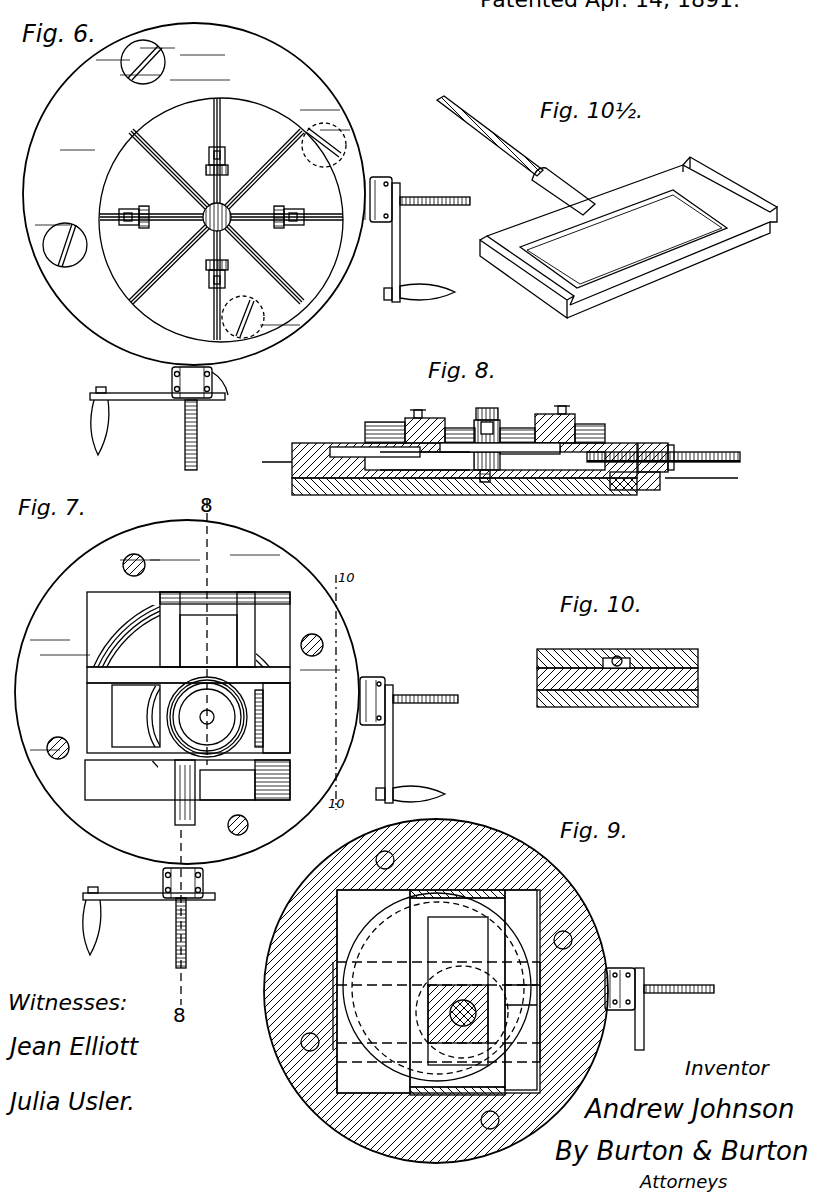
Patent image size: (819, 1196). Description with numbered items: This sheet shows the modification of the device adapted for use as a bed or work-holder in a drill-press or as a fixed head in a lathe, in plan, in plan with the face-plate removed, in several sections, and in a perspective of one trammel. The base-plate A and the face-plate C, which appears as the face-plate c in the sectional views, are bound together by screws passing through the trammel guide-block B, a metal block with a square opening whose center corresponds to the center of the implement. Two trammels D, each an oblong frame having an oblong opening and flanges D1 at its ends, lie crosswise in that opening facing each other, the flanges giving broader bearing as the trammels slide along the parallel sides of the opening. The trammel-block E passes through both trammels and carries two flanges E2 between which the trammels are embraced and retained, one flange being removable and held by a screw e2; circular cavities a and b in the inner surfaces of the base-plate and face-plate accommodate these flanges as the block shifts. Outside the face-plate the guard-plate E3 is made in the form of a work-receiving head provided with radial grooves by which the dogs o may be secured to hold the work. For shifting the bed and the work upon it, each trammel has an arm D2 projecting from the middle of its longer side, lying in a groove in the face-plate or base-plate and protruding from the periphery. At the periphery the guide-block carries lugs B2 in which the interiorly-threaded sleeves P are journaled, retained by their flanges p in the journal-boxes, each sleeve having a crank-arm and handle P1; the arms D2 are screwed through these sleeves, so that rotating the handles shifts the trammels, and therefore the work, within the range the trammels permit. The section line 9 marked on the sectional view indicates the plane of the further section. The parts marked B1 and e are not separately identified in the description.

In FIG. 6, the face-plate C is at (194, 194).
In FIG. 6, the flange or guard-plate E3 is at (221, 219).
In FIG. 8, the flange or guard-plate E3 is at (590, 427).
In FIG. 6, the dogs o is at (209, 152).
In FIG. 8, the dogs o is at (535, 414).
In FIG. 6, the lugs B2 is at (378, 180).
In FIG. 8, the lugs B2 is at (655, 488).
In FIG. 7, the lugs B2 is at (372, 680).
In FIG. 9, the lugs B2 is at (625, 972).
In FIG. 6, the flanges of the threaded sleeves p is at (398, 190).
In FIG. 8, the flanges of the threaded sleeves p is at (674, 452).
In FIG. 7, the flanges of the threaded sleeves p is at (392, 690).
In FIG. 9, the flanges of the threaded sleeves p is at (644, 984).
In FIG. 6, the crank-arm and handle P1 is at (398, 255).
In FIG. 7, the crank-arm and handle P1 is at (390, 755).
In FIG. 9, the crank-arm and handle P1 is at (644, 1020).
In FIG. 6, the trammel arm D2 is at (445, 200).
The trammel arm D2 is at (516, 155).
In FIG. 8, the trammel arm D2 is at (702, 453).
In FIG. 7, the trammel arm D2 is at (432, 697).
In FIG. 10, the trammel arm D2 is at (620, 658).
In FIG. 9, the trammel arm D2 is at (680, 988).
The trammel flanges D1 is at (728, 178).
In FIG. 8, the trammel flanges D1 is at (345, 495).
In FIG. 7, the trammel flanges D1 is at (240, 600).
In FIG. 9, the trammel flanges D1 is at (485, 890).
The trammels D is at (665, 255).
In FIG. 8, the trammels D is at (395, 478).
In FIG. 7, the trammels D is at (260, 752).
In FIG. 9, the trammels D is at (457, 992).
The circular cavity in base-plate a is at (623, 239).
In FIG. 8, the circular cavity in base-plate a is at (540, 490).
In FIG. 7, the circular cavity in base-plate a is at (207, 717).
In FIG. 9, the circular cavity in base-plate a is at (431, 991).
In FIG. 8, the circular cavity in face-plate b is at (395, 440).
In FIG. 8, the face-plate c is at (345, 443).
In FIG. 10, the face-plate c is at (680, 655).
In FIG. 8, the section line 9 9 is at (497, 471).
In FIG. 8, the flanges of the trammel-block E2 is at (476, 465).
In FIG. 7, the flanges of the trammel-block E2 is at (207, 717).
In FIG. 9, the flanges of the trammel-block E2 is at (455, 990).
In FIG. 8, the screw e2 is at (487, 482).
In FIG. 7, the screw e2 is at (214, 717).
In FIG. 9, the screw e2 is at (468, 1015).
In FIG. 8, the trammel guide-block B is at (612, 478).
In FIG. 7, the trammel guide-block B is at (140, 630).
In FIG. 10, the trammel guide-block B is at (698, 686).
In FIG. 9, the trammel guide-block B is at (436, 991).
In FIG. 8, the base-plate A is at (625, 495).
In FIG. 7, the base-plate A is at (270, 655).
In FIG. 10, the base-plate A is at (685, 707).
In FIG. 9, the base-plate A is at (373, 991).
In FIG. 7, the bracket e is at (203, 885).
In FIG. 9, the trammel-block E is at (435, 1032).
In FIG. 9, the ring B' B1 is at (438, 987).
In FIG. 8, the interiorly-threaded sleeves P is at (668, 446).